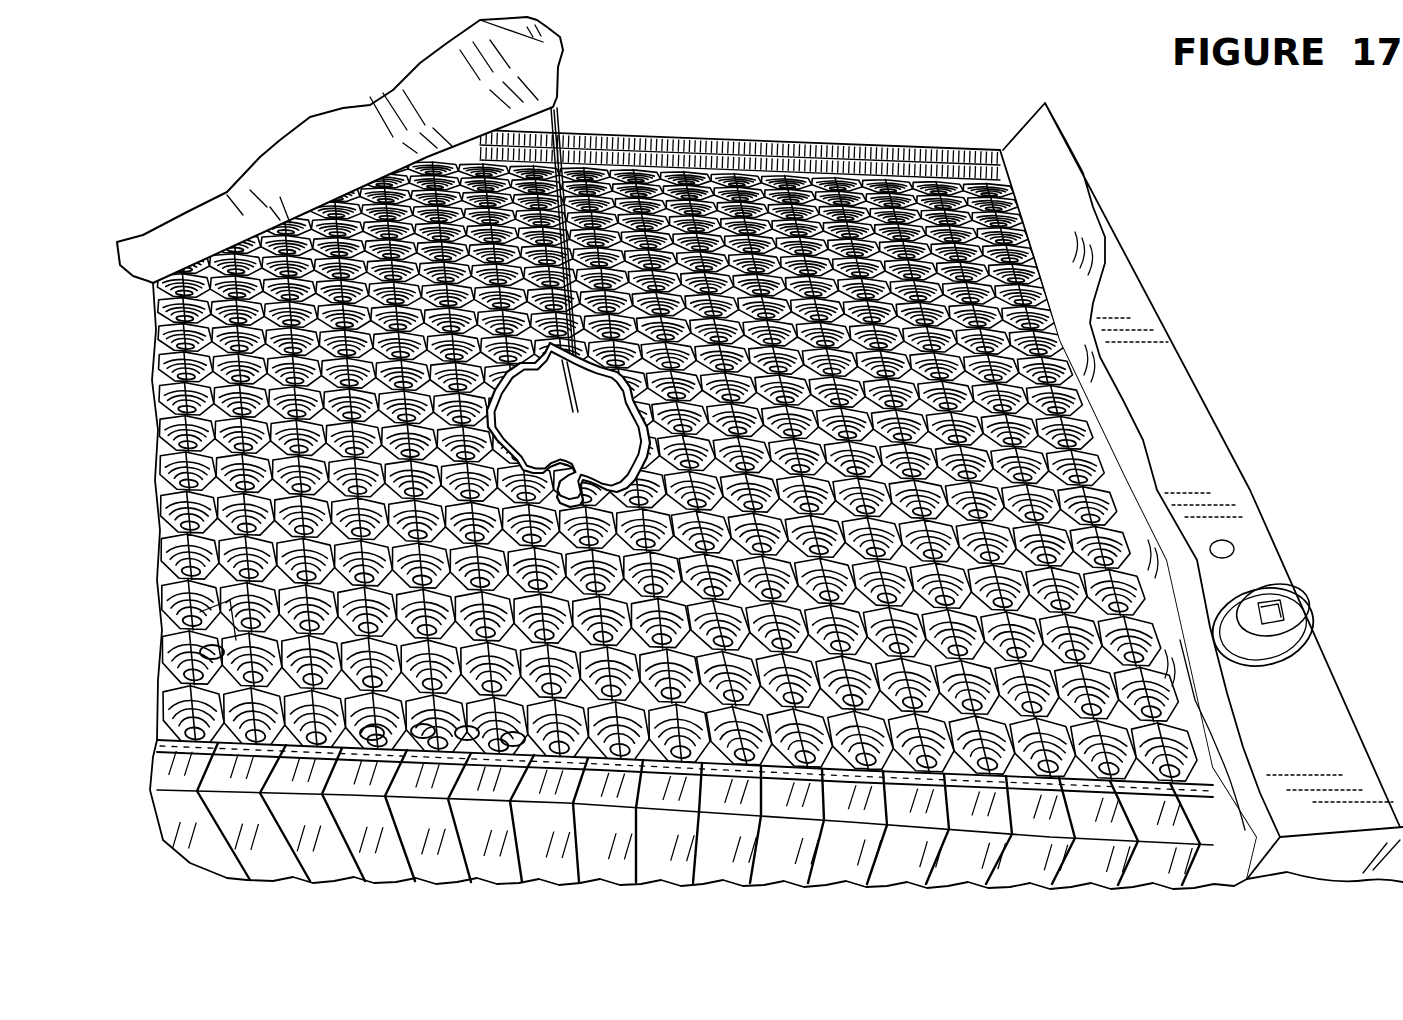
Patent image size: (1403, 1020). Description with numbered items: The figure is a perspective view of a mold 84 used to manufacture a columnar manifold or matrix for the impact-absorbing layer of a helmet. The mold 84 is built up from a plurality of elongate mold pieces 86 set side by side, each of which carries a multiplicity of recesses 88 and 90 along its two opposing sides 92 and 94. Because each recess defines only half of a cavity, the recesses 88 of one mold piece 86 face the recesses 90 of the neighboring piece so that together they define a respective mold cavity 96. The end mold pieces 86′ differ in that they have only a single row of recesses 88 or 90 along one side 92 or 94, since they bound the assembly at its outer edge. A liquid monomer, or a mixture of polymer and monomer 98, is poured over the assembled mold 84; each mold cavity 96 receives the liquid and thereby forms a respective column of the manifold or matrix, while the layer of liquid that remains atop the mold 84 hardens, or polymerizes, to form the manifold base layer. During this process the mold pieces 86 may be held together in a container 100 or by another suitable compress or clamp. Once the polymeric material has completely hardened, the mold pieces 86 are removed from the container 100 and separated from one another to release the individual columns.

The mold 84 is at (160, 493).
The elongate mold pieces 86 is at (788, 873).
The end mold pieces 86′ is at (1212, 860).
The recesses 88 is at (423, 738).
The recesses 90 is at (513, 746).
The side 92 is at (1078, 812).
The side 94 is at (940, 810).
The mold cavity 96 is at (213, 648).
The liquid monomer or mixture of polymer and monomer 98 is at (560, 112).
The container 100 is at (1010, 146).